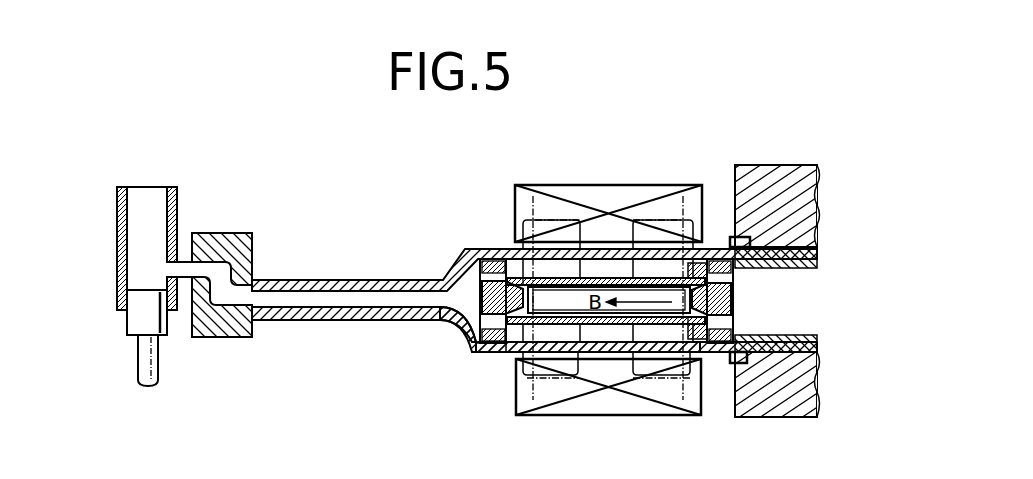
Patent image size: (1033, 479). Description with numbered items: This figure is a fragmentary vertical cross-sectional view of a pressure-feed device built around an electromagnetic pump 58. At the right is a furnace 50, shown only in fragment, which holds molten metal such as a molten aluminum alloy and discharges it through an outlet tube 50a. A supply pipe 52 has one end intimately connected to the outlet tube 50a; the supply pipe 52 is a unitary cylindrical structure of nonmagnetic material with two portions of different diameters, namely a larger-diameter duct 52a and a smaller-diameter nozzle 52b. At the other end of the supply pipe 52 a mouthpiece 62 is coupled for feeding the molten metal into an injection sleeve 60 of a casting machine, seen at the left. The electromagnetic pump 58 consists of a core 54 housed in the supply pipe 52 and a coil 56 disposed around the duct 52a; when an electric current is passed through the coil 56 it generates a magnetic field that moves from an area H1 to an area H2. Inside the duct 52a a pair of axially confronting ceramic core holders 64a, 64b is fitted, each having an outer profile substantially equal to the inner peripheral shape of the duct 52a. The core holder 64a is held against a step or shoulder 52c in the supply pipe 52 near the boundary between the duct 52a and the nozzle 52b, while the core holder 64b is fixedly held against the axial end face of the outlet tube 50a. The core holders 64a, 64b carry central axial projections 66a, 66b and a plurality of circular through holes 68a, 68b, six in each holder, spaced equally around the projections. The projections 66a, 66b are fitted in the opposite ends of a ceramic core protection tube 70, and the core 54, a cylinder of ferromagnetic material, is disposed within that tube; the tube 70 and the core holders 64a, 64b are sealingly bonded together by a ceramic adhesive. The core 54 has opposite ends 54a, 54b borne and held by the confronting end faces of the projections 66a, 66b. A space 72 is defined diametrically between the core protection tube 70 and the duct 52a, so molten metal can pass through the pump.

The furnace 50 is at (778, 182).
The outlet tube 50a is at (818, 257).
The supply pipe 52 is at (312, 279).
The larger-diameter duct 52a is at (550, 352).
The smaller-diameter nozzle 52b is at (318, 313).
The step or shoulder 52c is at (469, 356).
The core 54 is at (659, 278).
The core end 54a is at (470, 334).
The core end 54b is at (674, 342).
The coil 56 is at (565, 197).
The electromagnetic pump 58 is at (477, 370).
The injection sleeve 60 is at (117, 213).
The mouthpiece 62 is at (223, 247).
The core holder 64a is at (506, 354).
The core holder 64b is at (727, 364).
The central axial projection 66a is at (494, 260).
The central axial projection 66b is at (726, 317).
The circular through holes 68a is at (478, 268).
The circular through holes 68b is at (728, 273).
The core protection tube 70 is at (612, 388).
The space 72 is at (604, 275).
The magnetic field area H1 is at (684, 192).
The magnetic field area H2 is at (530, 195).